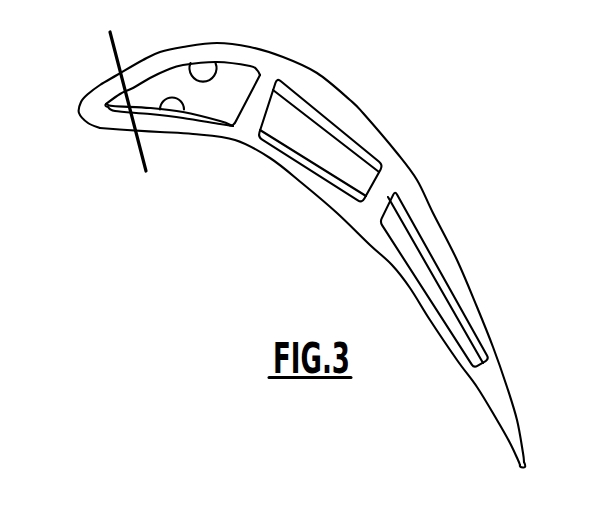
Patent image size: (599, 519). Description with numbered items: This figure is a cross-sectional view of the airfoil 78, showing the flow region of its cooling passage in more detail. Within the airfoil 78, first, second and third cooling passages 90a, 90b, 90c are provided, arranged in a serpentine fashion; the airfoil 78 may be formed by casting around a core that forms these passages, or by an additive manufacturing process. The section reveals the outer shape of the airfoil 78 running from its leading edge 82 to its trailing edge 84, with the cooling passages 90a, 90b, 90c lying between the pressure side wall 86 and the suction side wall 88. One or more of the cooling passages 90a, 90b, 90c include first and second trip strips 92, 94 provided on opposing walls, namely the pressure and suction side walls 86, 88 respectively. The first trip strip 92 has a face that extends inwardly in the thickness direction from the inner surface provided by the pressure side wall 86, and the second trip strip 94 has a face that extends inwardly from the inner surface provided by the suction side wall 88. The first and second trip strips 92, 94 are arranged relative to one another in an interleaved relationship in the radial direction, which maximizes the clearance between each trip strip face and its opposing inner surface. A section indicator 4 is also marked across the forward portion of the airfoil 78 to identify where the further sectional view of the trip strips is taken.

The section line 4- 4 is at (110, 34).
The airfoil 78 is at (294, 255).
The leading edge 82 is at (78, 113).
The trailing edge 84 is at (523, 466).
The pressure side wall 86 is at (272, 158).
The suction side wall 88 is at (345, 103).
The first cooling passage 90a is at (227, 87).
The second cooling passage 90b is at (358, 149).
The third cooling passage 90c is at (433, 259).
The first trip strip 92 is at (180, 104).
The second trip strip 94 is at (204, 78).